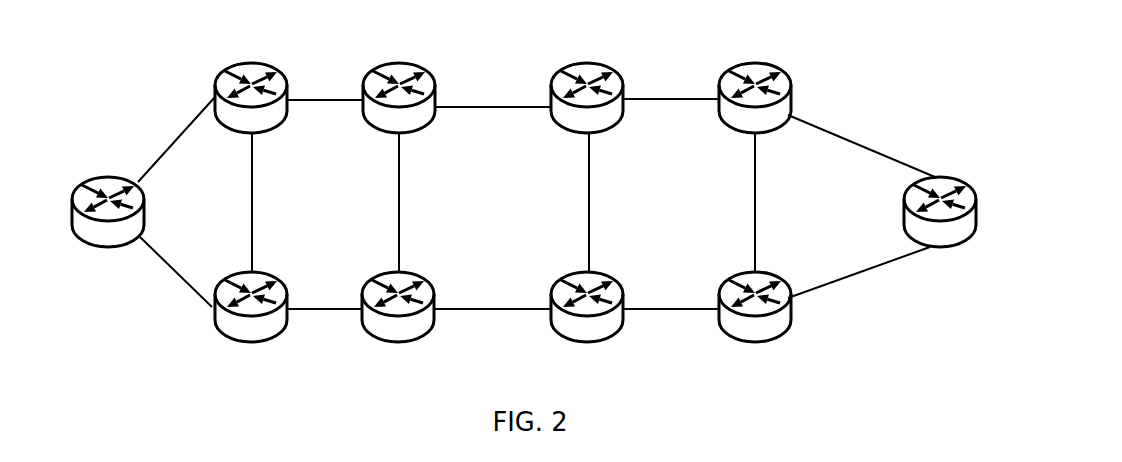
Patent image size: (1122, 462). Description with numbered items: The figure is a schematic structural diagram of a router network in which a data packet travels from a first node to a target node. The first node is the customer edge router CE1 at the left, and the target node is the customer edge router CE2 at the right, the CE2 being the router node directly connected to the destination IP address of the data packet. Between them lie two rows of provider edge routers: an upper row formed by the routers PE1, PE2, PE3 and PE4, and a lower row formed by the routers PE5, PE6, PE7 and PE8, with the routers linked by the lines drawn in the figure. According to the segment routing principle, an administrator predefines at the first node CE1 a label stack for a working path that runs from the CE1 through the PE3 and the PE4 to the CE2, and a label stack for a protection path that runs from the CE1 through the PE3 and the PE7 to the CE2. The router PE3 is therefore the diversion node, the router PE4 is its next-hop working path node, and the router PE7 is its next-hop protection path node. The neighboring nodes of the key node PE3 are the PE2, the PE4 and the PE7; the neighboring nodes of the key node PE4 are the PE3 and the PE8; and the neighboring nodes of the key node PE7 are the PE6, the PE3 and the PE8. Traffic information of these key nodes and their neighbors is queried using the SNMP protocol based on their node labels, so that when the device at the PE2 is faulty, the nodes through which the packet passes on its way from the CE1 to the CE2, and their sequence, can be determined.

The provider edge router PE1 is at (251, 78).
The provider edge router PE2 is at (399, 78).
The provider edge router PE3 is at (587, 78).
The provider edge router PE4 is at (755, 78).
The provider edge router PE5 is at (251, 328).
The provider edge router PE6 is at (398, 328).
The provider edge router PE7 is at (587, 328).
The provider edge router PE8 is at (755, 328).
The customer edge router CE1 is at (108, 191).
The customer edge router CE2 is at (940, 194).